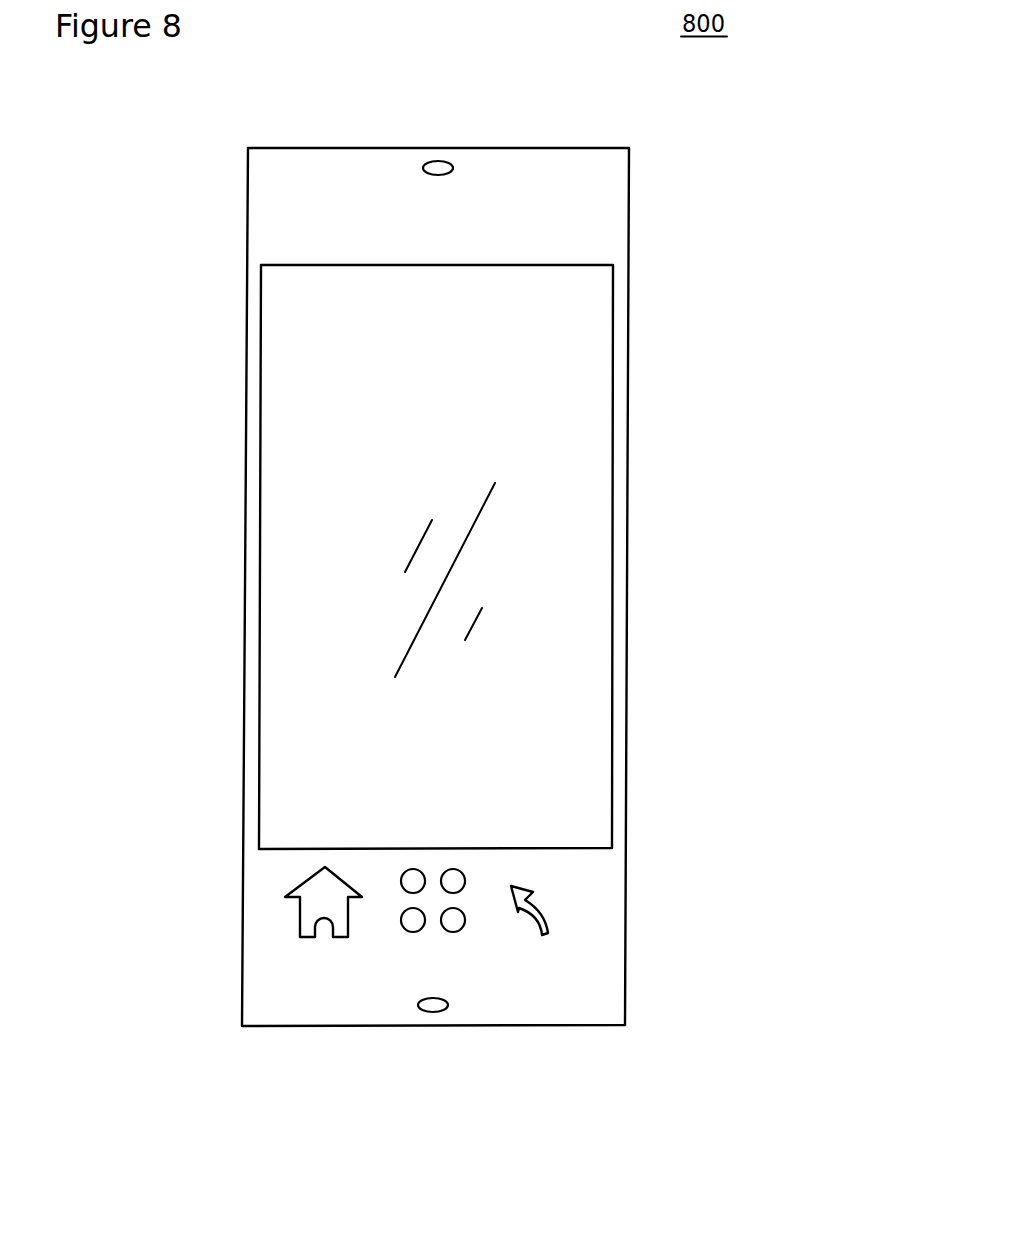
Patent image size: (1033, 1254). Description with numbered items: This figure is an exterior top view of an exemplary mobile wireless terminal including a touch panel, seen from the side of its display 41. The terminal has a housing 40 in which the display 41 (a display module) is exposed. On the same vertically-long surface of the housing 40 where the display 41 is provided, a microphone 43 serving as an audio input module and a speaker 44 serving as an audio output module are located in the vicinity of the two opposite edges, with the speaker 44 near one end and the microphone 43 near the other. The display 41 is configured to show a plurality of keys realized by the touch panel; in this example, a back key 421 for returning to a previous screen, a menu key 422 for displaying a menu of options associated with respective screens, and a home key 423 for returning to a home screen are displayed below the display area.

The housing 40 is at (629, 212).
The display 41 is at (613, 353).
The speaker 44 is at (438, 160).
The microphone 43 is at (433, 1012).
The back key 421 is at (545, 937).
The menu key 422 is at (413, 932).
The home key 423 is at (336, 937).